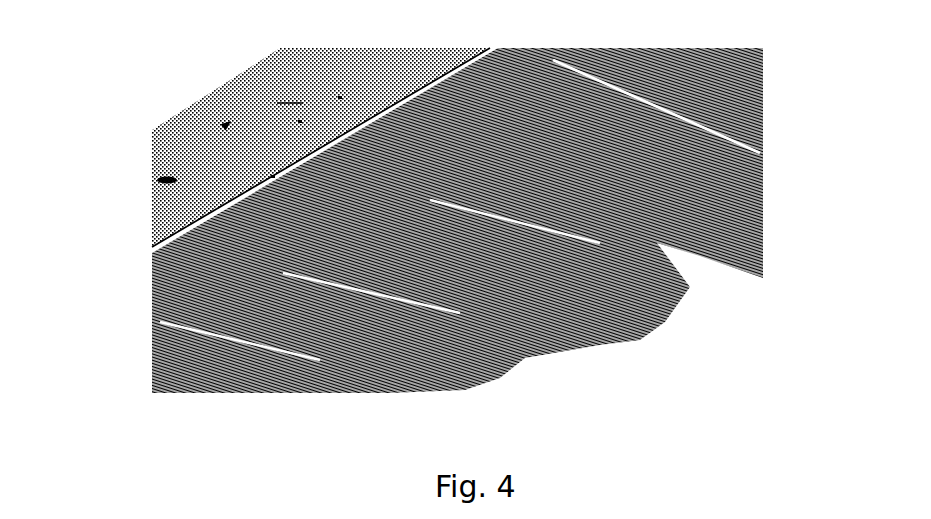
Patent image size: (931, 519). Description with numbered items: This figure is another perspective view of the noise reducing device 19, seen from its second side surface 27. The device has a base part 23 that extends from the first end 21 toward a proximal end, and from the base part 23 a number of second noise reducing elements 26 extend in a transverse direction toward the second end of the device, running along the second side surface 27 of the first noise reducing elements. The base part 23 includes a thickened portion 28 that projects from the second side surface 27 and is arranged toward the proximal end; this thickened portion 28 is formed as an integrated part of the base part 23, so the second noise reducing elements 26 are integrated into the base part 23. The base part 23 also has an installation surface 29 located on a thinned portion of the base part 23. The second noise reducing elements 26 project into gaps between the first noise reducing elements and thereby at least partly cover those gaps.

The noise reducing device 19 is at (444, 202).
The first end 21 is at (259, 137).
The base part 23 is at (147, 173).
The second noise reducing elements 26 is at (718, 292).
The second side surface 27 is at (291, 91).
The thickened portion 28 is at (153, 250).
The installation surface 29 is at (224, 128).